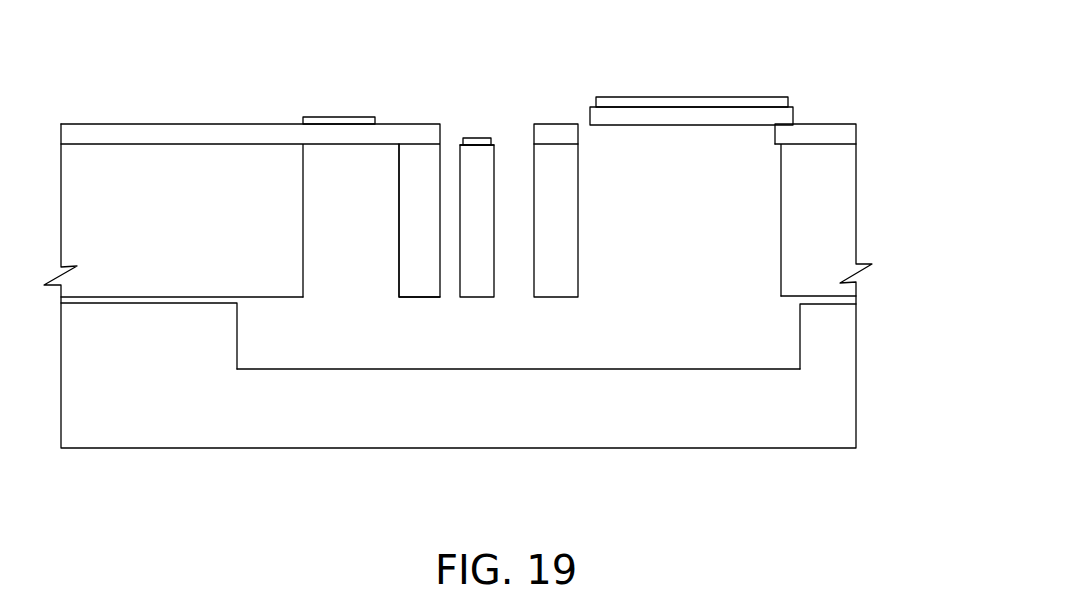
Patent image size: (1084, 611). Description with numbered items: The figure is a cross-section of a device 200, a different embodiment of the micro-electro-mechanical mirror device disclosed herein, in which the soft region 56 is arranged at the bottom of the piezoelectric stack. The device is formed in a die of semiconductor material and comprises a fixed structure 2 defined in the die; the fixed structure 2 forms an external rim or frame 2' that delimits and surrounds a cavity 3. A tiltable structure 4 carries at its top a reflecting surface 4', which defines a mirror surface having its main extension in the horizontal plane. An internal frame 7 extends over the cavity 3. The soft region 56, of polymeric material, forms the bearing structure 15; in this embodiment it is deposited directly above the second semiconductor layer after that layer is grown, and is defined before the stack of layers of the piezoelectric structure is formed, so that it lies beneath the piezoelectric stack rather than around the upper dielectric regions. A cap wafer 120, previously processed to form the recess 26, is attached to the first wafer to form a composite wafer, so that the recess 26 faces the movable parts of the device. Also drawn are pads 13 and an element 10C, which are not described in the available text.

The device 200 is at (486, 279).
The fixed structure 2 is at (487, 331).
The external rim or frame 2' is at (847, 220).
The cavity 3 is at (434, 362).
The tiltable structure 4 is at (477, 249).
The reflecting surface 4' is at (477, 100).
The internal frame 7 is at (413, 280).
The bonding pad 13 is at (332, 114).
The chip / membrane element 10C is at (721, 124).
The soft region 56 is at (691, 165).
The bearing structure 15 is at (697, 114).
The recess 26 is at (546, 362).
The cap wafer 120 is at (489, 422).